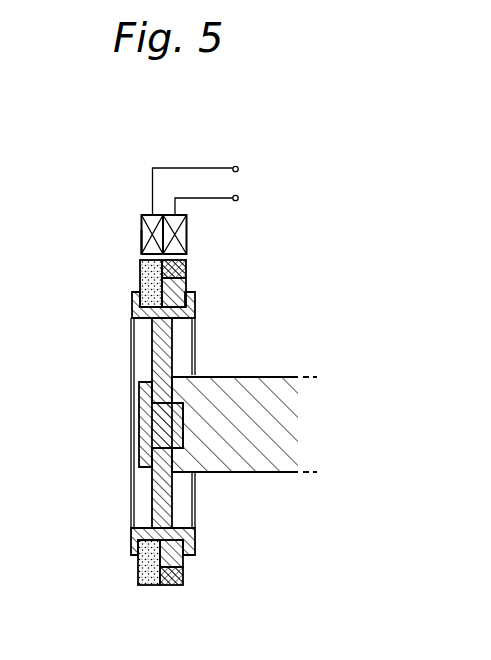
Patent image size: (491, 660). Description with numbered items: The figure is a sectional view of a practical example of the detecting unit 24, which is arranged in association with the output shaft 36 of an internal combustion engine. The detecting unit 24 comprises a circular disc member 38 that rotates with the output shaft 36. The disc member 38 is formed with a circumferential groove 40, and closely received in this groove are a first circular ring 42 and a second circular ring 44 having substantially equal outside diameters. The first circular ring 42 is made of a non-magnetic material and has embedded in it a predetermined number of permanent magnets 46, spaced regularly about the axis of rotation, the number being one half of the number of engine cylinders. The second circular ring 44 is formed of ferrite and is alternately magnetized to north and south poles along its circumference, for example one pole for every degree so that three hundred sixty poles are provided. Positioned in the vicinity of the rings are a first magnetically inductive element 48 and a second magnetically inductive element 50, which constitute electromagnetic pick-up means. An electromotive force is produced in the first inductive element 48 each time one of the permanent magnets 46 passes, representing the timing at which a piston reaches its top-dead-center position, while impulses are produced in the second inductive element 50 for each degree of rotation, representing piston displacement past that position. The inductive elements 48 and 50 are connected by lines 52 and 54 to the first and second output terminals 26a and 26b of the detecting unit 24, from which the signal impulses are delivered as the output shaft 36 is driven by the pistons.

The detecting unit 24 is at (118, 278).
The first output terminal 26a is at (238, 198).
The second output terminal 26b is at (238, 169).
The output shaft 36 is at (262, 473).
The circular disc member 38 is at (129, 467).
The circumferential groove 40 is at (138, 558).
The first circular ring 42 is at (196, 293).
The second circular ring 44 is at (140, 278).
The permanent magnets 46 is at (187, 268).
The first magnetically inductive element 48 is at (187, 238).
The second magnetically inductive element 50 is at (143, 236).
The line 52 is at (196, 198).
The line 54 is at (178, 168).